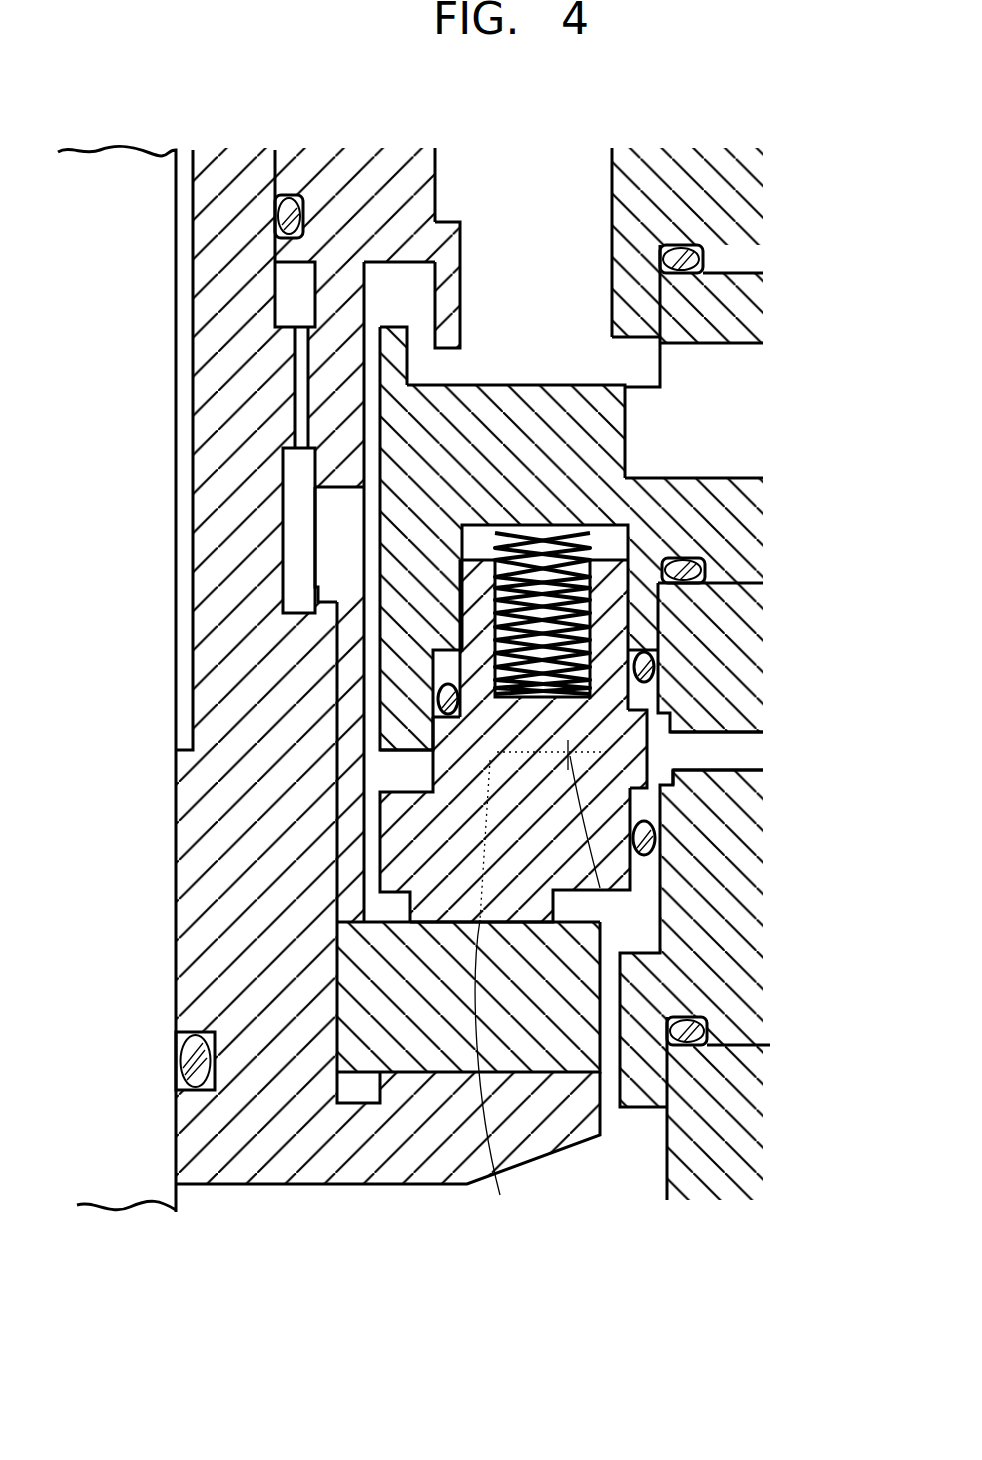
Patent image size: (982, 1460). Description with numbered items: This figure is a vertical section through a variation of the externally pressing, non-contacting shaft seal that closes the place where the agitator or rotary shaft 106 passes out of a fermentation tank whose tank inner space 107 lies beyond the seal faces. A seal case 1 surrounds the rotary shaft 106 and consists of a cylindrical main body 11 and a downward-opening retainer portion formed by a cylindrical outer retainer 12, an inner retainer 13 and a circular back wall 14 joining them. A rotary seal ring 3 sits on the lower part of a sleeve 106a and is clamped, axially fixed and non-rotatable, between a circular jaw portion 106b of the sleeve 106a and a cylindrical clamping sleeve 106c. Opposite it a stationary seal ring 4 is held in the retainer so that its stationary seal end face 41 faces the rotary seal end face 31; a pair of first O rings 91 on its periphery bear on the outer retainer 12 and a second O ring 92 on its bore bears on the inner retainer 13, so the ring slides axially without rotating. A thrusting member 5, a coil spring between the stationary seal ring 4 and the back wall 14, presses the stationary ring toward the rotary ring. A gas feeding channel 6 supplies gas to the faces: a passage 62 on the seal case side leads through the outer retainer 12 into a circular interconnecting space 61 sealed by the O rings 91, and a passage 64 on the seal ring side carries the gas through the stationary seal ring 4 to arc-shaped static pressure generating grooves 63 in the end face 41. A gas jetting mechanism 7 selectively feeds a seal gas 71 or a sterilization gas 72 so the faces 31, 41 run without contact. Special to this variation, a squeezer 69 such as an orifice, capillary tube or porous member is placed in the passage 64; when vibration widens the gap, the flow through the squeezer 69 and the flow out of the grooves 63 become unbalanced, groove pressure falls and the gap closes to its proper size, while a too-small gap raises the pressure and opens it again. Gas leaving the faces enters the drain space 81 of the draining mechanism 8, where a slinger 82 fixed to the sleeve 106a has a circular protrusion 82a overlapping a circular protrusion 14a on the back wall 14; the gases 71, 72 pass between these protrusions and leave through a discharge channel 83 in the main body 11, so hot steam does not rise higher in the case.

The seal case 1 is at (771, 209).
The rotary seal ring 3 is at (583, 1005).
The stationary seal ring 4 is at (480, 855).
The thrusting member 5 is at (567, 633).
The gas feeding channel 6 is at (720, 729).
The gas jetting mechanism 7 is at (808, 748).
The draining mechanism 8 is at (791, 392).
The cylindrical main body 11 is at (695, 163).
The outer retainer 12 is at (738, 567).
The inner retainer 13 is at (395, 612).
The back wall 14 is at (583, 405).
The circular protrusion 14a is at (403, 330).
The rotary seal end face 31 is at (440, 913).
The stationary seal end face 41 is at (418, 925).
The interconnecting space 61 is at (663, 780).
The passage on the seal case side 62 is at (725, 760).
The static pressure generating grooves 63 is at (542, 982).
The passage on the seal ring side 64 is at (477, 852).
The squeezer 69 is at (567, 887).
The seal gas 71 is at (823, 752).
The sterilization gas 72 is at (730, 412).
The drain space 81 is at (597, 178).
The slinger 82 is at (358, 183).
The circular protrusion 82a is at (460, 320).
The discharge channel 83 is at (713, 455).
The first O rings 91 is at (633, 672).
The second O ring 92 is at (440, 700).
The rotary shaft 106 is at (135, 1188).
The sleeve 106a is at (190, 1003).
The circular jaw portion 106b is at (412, 1190).
The clamping sleeve 106c is at (345, 745).
The tank inner space 107 is at (630, 1161).